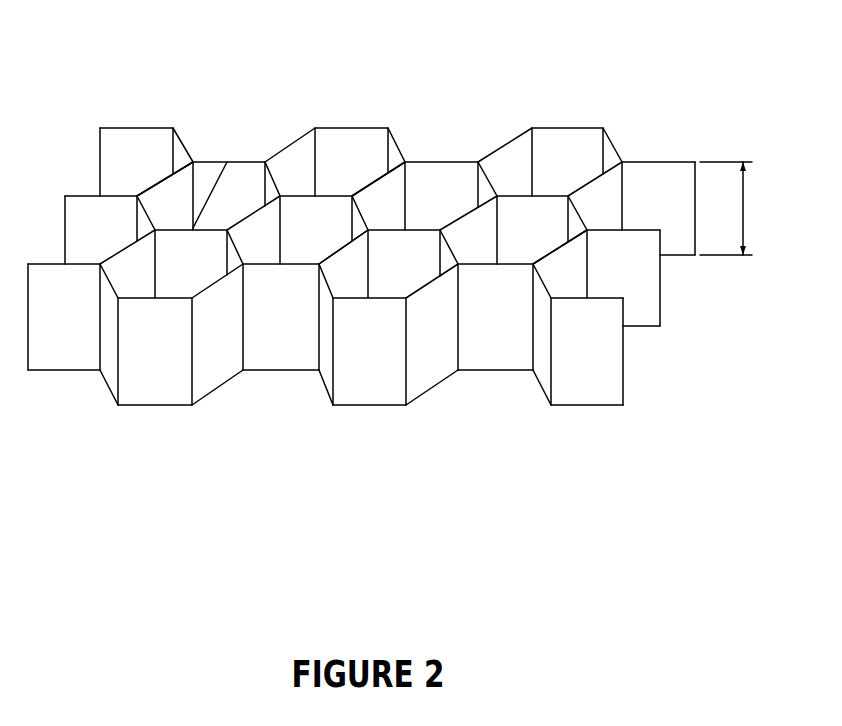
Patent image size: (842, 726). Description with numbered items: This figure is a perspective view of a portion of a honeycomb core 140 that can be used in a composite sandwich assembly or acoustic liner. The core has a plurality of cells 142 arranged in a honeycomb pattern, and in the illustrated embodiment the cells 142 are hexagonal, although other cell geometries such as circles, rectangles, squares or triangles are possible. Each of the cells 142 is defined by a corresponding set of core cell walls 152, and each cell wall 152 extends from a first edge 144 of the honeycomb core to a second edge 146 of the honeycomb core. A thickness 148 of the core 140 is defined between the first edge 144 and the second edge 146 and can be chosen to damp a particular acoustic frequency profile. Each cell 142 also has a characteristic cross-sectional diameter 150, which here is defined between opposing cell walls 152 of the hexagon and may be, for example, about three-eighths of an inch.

The honeycomb core 140 is at (411, 253).
The cells 142 is at (515, 170).
The first edge 144 is at (430, 386).
The second edge 146 is at (594, 165).
The thickness 148 is at (745, 207).
The characteristic cross-sectional diameter 150 is at (208, 190).
The core cell walls 152 is at (188, 265).